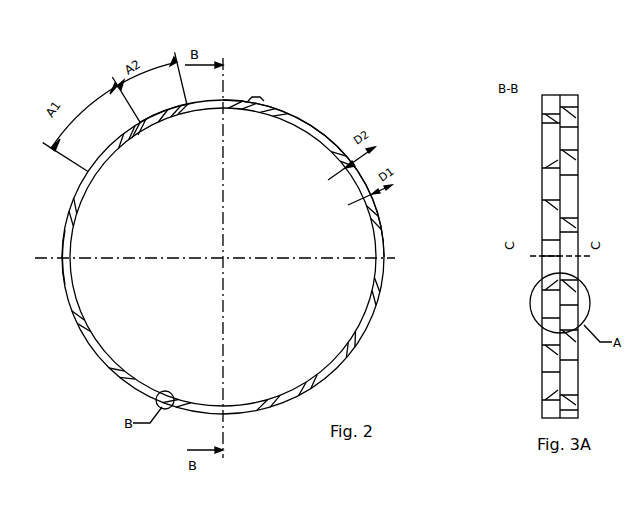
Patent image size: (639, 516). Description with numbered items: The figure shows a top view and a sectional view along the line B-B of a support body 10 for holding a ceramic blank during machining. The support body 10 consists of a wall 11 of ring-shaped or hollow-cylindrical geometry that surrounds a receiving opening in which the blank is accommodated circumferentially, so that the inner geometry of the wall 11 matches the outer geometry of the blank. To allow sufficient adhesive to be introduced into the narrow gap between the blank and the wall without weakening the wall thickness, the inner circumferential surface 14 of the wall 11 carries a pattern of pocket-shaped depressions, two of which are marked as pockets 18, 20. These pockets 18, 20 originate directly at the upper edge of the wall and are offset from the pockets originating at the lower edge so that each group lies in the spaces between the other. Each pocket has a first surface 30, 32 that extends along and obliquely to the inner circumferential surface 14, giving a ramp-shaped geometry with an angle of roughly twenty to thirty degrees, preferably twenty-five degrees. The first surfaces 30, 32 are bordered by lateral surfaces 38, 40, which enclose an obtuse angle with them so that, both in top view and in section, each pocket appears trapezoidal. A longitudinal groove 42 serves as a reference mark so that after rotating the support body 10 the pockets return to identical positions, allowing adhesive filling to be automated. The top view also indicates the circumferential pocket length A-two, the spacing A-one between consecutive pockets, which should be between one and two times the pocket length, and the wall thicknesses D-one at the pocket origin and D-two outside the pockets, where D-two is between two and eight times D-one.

In FIG. 3A, the support body 10 is at (560, 68).
In FIG. 2, the wall 11 is at (385, 240).
In FIG. 3A, the inner circumferential surface 14 is at (570, 235).
In FIG. 2, the pocket-shaped depression 18 is at (155, 125).
In FIG. 2, the pocket-shaped depression 20 is at (288, 125).
In FIG. 2, the first surface 30 is at (173, 112).
In FIG. 2, the first surface 32 is at (290, 108).
In FIG. 3A, the first surface 32 is at (548, 208).
In FIG. 2, the lateral surface 38 is at (138, 127).
In FIG. 2, the lateral surface 40 is at (182, 105).
In FIG. 2, the longitudinal groove 42 is at (255, 100).